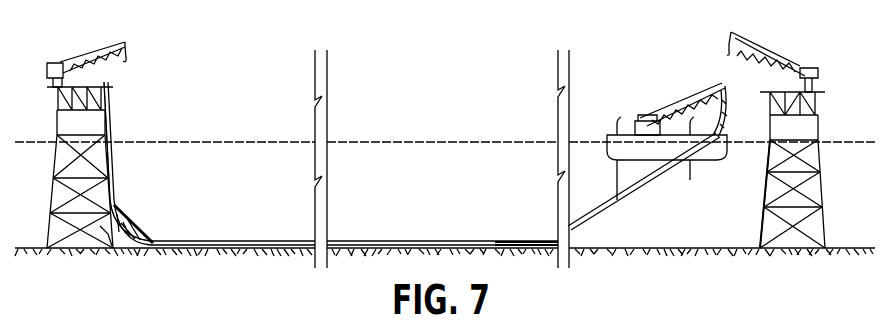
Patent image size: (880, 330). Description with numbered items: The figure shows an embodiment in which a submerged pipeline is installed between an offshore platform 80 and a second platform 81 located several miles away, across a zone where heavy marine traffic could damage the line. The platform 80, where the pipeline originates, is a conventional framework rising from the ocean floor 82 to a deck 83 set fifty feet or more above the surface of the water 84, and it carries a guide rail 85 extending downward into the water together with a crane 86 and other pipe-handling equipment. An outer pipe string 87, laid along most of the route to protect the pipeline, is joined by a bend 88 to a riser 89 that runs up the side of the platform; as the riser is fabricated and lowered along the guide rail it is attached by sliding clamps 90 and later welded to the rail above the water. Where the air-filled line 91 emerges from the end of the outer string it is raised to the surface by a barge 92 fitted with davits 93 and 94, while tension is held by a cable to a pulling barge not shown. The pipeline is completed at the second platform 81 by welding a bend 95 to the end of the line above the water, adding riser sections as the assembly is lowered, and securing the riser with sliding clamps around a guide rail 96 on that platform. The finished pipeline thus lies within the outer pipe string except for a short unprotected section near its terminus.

The offshore platform 80 is at (50, 178).
The second platform 81 is at (822, 178).
The ocean floor 82 is at (630, 250).
The deck 83 is at (55, 87).
The surface of the water 84 is at (449, 143).
The guide rail 85 is at (107, 237).
The crane 86 is at (124, 42).
The outer pipe string 87 is at (202, 242).
The bend 88 is at (128, 234).
The riser 89 is at (112, 170).
The sliding clamps 90 is at (110, 152).
The air-filled line 91 is at (506, 244).
The barge 92 is at (712, 161).
The davit 93 is at (618, 124).
The davit 94 is at (692, 105).
The bend 95 is at (728, 96).
The guide rail 96 is at (761, 222).